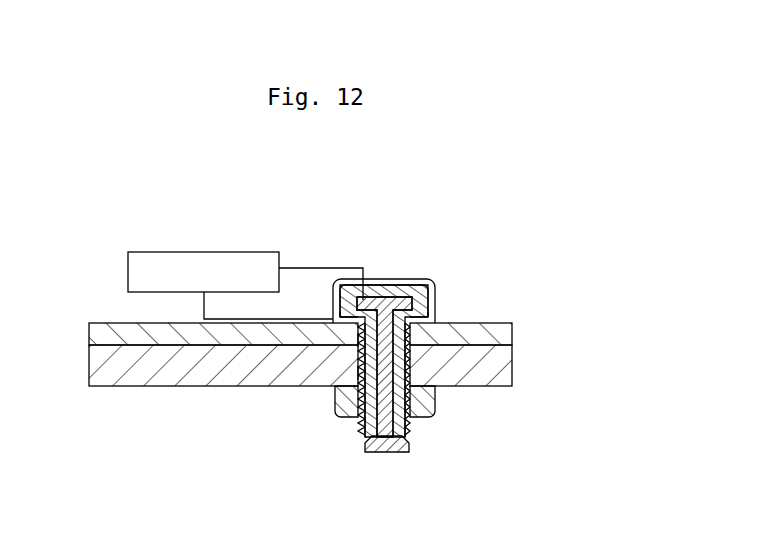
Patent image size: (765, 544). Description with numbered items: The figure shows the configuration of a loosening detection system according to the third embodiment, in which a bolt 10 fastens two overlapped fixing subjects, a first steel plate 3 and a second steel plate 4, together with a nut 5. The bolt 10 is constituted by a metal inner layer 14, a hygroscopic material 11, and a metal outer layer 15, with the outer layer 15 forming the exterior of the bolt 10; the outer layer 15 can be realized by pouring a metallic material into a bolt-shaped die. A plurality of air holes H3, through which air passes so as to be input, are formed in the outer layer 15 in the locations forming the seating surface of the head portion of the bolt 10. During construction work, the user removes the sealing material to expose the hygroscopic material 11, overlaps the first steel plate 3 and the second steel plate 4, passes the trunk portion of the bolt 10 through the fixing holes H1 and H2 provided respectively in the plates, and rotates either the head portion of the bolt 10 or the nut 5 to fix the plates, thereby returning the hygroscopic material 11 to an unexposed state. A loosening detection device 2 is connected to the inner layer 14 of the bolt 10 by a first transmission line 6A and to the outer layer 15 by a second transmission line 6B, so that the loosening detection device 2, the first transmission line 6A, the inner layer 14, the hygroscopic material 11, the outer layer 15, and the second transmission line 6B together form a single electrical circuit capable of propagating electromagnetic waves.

The loosening detection device 2 is at (210, 250).
The first transmission line 6A is at (306, 268).
The second transmission line 6B is at (206, 318).
The first steel plate 3 is at (513, 325).
The second steel plate 4 is at (513, 359).
The nut 5 is at (436, 406).
The bolt 10 is at (379, 280).
The hygroscopic material 11 is at (425, 279).
The inner layer 14 is at (395, 289).
The outer layer 15 is at (409, 445).
The fixing hole H1 is at (358, 339).
The fixing hole H2 is at (358, 372).
The air holes H3 is at (345, 313).